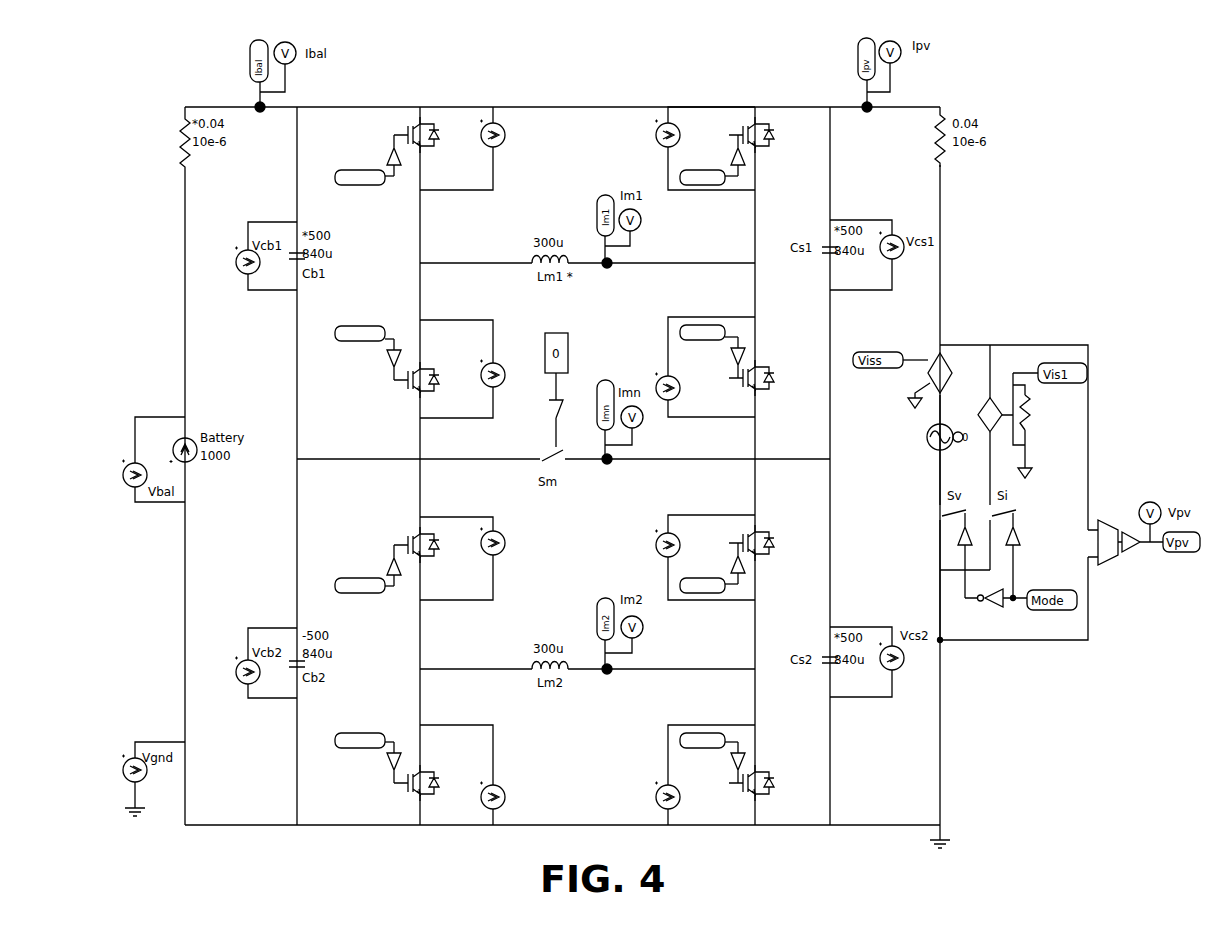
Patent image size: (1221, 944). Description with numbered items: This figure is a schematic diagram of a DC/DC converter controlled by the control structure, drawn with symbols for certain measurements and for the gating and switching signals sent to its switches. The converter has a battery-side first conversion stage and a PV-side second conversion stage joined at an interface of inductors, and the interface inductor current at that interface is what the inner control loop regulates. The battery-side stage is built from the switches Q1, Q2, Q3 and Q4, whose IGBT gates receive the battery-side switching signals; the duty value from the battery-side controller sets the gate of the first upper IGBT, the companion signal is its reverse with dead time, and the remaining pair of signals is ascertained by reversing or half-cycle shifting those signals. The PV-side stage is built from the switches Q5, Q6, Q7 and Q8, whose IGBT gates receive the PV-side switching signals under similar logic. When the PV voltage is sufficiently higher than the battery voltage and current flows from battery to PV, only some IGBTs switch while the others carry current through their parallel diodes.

The switch Q1 is at (437, 148).
The switch Q2 is at (437, 369).
The switch Q3 is at (437, 558).
The switch Q4 is at (437, 775).
The switch Q5 is at (727, 148).
The switch Q6 is at (727, 367).
The switch Q7 is at (727, 554).
The switch Q8 is at (727, 775).